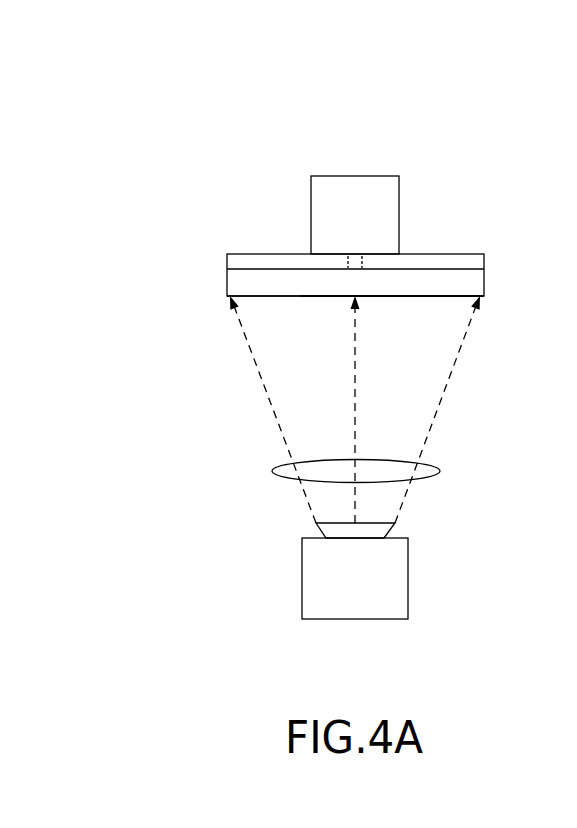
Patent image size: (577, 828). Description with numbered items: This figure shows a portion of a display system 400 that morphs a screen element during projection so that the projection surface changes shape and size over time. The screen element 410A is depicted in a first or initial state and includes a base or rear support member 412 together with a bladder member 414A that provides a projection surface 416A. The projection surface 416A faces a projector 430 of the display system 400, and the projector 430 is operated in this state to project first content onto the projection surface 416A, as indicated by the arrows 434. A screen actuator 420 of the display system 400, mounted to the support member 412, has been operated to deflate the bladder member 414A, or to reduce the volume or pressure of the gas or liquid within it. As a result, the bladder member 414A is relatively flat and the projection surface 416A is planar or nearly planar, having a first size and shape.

The display system 400 is at (170, 127).
The screen element 410A is at (278, 284).
The base or rear support member 412 is at (242, 255).
The bladder member 414A is at (225, 278).
The projection surface 416A is at (420, 296).
The screen actuator 420 is at (399, 210).
The projector 430 is at (302, 575).
The arrows 434 is at (272, 471).